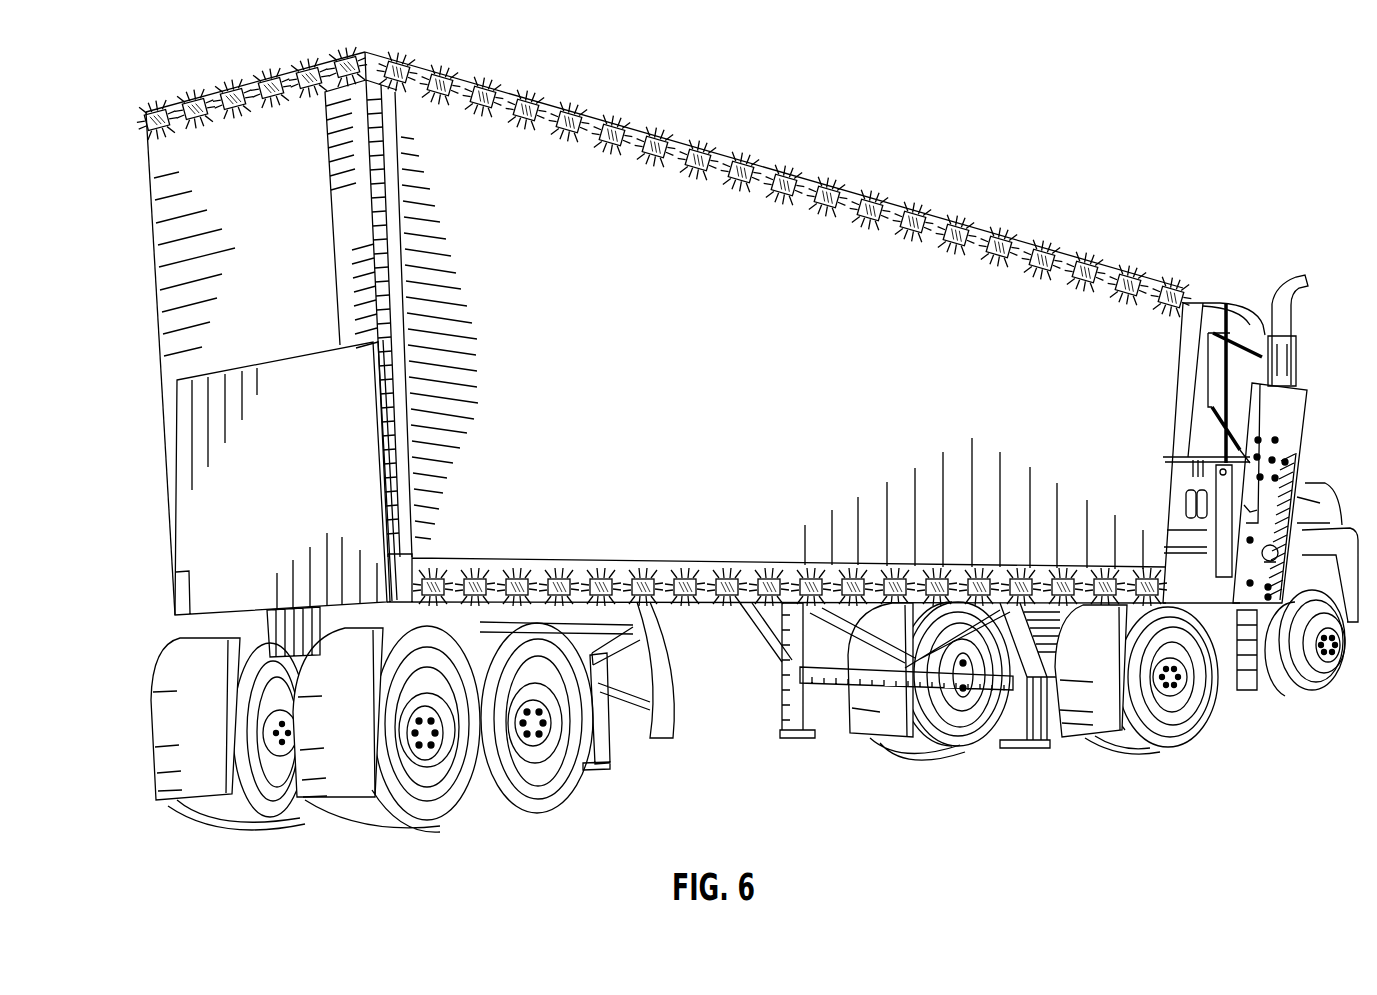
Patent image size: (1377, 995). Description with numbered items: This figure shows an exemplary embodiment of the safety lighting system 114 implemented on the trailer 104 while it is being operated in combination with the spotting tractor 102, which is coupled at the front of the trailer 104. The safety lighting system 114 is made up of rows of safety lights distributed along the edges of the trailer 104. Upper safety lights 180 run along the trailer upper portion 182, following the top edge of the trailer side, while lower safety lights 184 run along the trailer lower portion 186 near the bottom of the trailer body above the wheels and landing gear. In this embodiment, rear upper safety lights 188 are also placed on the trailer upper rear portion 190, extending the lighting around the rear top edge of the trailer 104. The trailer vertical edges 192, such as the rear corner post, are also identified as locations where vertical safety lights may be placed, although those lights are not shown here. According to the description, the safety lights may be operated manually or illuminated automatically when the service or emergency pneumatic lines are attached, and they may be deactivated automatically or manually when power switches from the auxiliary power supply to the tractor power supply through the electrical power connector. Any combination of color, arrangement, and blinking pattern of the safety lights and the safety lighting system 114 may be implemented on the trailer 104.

The spotting tractor 102 is at (1250, 605).
The trailer 104 is at (590, 207).
The safety lighting system 114 is at (1095, 215).
The upper safety lights 180 is at (484, 95).
The trailer upper portion 182 is at (800, 172).
The lower safety lights 184 is at (685, 603).
The trailer lower portion 186 is at (726, 619).
The rear upper safety lights 188 is at (153, 118).
The trailer upper rear portion 190 is at (278, 58).
The trailer vertical edges 192 is at (423, 494).